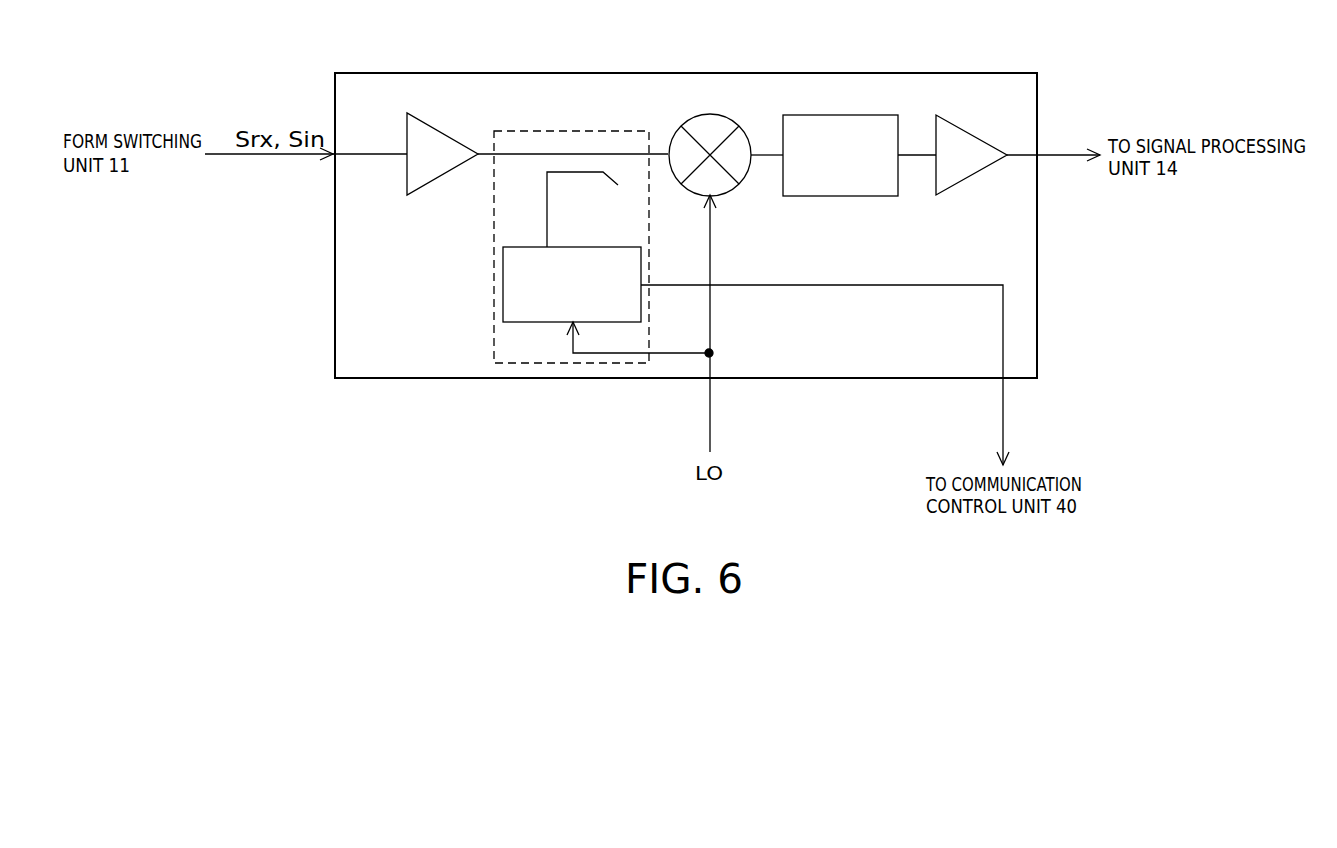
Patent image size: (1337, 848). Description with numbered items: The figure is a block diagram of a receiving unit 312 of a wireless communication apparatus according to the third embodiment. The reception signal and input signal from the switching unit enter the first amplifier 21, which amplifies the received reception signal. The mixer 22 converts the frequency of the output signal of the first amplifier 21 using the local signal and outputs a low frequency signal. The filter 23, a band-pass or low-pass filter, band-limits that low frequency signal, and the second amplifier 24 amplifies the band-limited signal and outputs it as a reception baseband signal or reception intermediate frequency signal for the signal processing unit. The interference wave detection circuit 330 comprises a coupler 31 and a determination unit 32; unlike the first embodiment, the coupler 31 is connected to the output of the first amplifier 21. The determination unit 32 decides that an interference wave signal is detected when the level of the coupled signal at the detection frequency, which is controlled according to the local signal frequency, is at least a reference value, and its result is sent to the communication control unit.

The receiving unit 312 is at (988, 73).
The first amplifier 21 is at (440, 132).
The interference wave detection circuit 330 is at (572, 131).
The coupler 31 is at (580, 174).
The mixer 22 is at (742, 188).
The filter 23 is at (840, 196).
The second amplifier 24 is at (972, 176).
The determination unit 32 is at (503, 288).